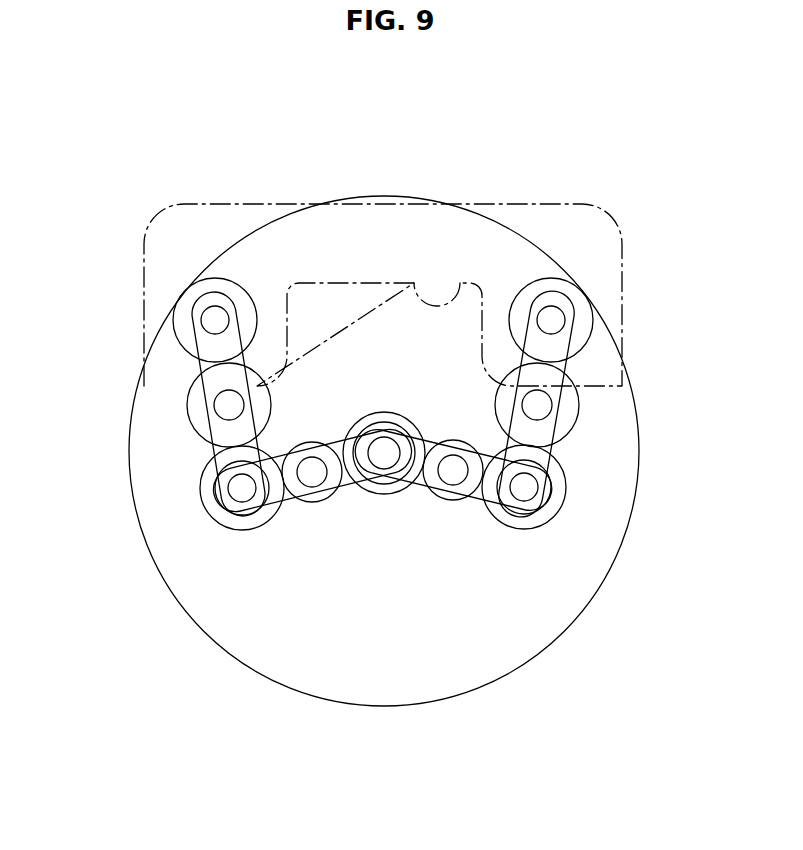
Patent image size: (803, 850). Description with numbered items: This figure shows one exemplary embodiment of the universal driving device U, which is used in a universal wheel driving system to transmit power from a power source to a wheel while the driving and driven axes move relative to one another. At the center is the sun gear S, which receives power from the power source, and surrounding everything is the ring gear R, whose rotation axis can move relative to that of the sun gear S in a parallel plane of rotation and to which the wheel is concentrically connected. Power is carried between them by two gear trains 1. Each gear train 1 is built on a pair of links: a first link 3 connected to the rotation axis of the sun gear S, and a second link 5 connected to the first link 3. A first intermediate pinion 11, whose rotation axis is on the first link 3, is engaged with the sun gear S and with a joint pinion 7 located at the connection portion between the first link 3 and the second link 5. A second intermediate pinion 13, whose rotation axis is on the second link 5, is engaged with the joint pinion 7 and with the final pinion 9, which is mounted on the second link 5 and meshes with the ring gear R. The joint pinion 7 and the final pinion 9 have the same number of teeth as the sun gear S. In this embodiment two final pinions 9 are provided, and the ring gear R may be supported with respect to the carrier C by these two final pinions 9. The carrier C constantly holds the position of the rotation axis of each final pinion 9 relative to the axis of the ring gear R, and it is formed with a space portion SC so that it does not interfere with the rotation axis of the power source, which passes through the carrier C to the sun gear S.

The gear train 1 is at (585, 507).
The first link 3 is at (424, 484).
The second link 5 is at (212, 452).
The joint pinion 7 is at (207, 502).
The final pinion 9 is at (178, 325).
The first intermediate pinion 11 is at (310, 442).
The second intermediate pinion 13 is at (197, 407).
The universal driving device U is at (196, 190).
The sun gear S is at (388, 412).
The space portion SC is at (462, 280).
The carrier C is at (487, 204).
The ring gear R is at (531, 243).